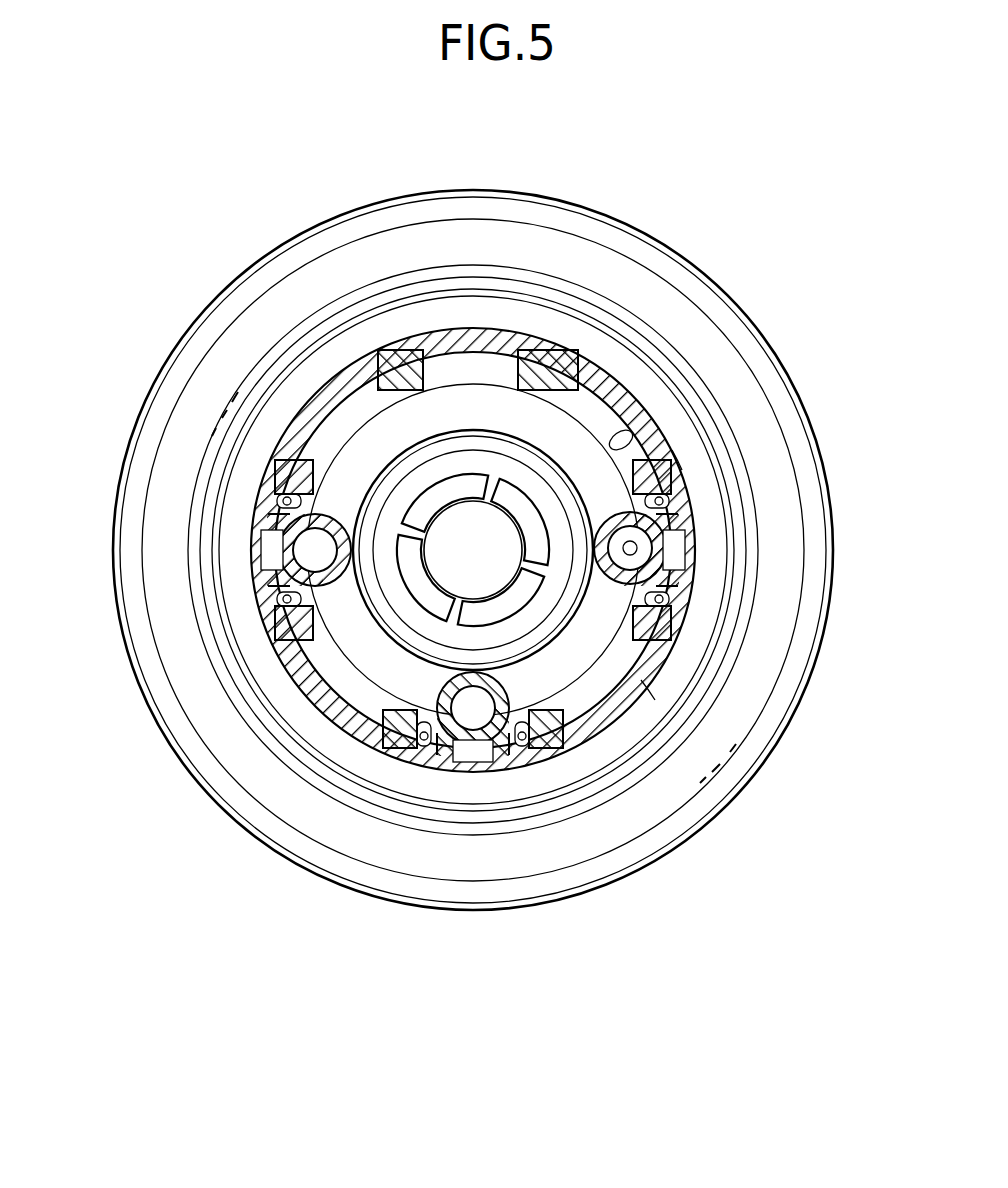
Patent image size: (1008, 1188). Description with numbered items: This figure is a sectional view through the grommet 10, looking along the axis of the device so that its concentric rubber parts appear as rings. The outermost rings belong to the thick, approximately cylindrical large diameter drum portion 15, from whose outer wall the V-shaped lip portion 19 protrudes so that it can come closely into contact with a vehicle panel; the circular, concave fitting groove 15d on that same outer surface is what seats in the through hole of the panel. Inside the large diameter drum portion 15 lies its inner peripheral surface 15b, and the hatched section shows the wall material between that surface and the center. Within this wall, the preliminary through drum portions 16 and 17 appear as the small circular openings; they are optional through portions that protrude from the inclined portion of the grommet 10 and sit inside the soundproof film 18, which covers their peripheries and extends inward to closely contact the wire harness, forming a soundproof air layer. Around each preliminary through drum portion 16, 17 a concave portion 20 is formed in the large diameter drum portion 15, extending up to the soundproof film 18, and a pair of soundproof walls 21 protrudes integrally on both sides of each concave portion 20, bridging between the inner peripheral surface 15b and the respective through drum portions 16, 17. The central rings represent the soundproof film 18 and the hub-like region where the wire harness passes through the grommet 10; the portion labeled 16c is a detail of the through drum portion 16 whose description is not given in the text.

The grommet 10 is at (297, 897).
The large diameter drum portion 15 is at (546, 330).
The inner peripheral surface 15b is at (628, 446).
The fitting groove 15d is at (688, 456).
The preliminary through drum portion 16 is at (614, 503).
The retainer portion 16c is at (652, 686).
The preliminary through drum portion 17 is at (333, 506).
The soundproof film 18 is at (466, 476).
The lip portion 19 is at (647, 847).
The concave portion 20 is at (262, 550).
The soundproof wall 21 is at (278, 500).